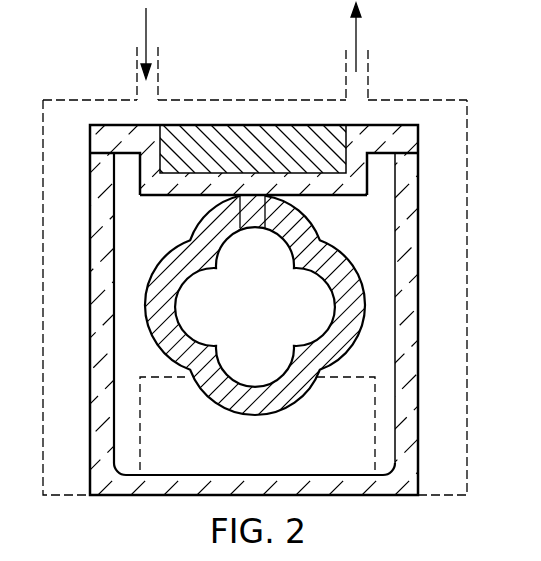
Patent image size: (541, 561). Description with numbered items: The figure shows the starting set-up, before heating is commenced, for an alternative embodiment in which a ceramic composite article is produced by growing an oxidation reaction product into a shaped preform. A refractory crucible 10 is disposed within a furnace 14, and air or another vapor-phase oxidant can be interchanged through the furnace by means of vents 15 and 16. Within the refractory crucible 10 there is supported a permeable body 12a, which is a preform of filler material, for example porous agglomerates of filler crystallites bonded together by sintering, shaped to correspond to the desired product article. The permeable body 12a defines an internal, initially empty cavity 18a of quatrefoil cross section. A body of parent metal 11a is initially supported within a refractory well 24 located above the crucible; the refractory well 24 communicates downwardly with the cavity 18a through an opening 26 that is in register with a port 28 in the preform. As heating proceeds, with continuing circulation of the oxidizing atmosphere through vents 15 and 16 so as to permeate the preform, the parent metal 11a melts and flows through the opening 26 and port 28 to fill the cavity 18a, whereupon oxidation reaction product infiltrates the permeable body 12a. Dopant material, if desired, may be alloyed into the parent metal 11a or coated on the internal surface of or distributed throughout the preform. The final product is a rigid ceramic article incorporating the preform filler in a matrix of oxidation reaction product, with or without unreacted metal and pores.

The refractory crucible 10 is at (407, 243).
The body of parent metal 11a is at (330, 128).
The permeable body 12a is at (177, 342).
The furnace 14 is at (250, 100).
The vent 15 is at (158, 70).
The vent 16 is at (368, 60).
The cavity 18a is at (310, 313).
The refractory well 24 is at (405, 137).
The opening 26 is at (262, 180).
The port 28 is at (260, 215).